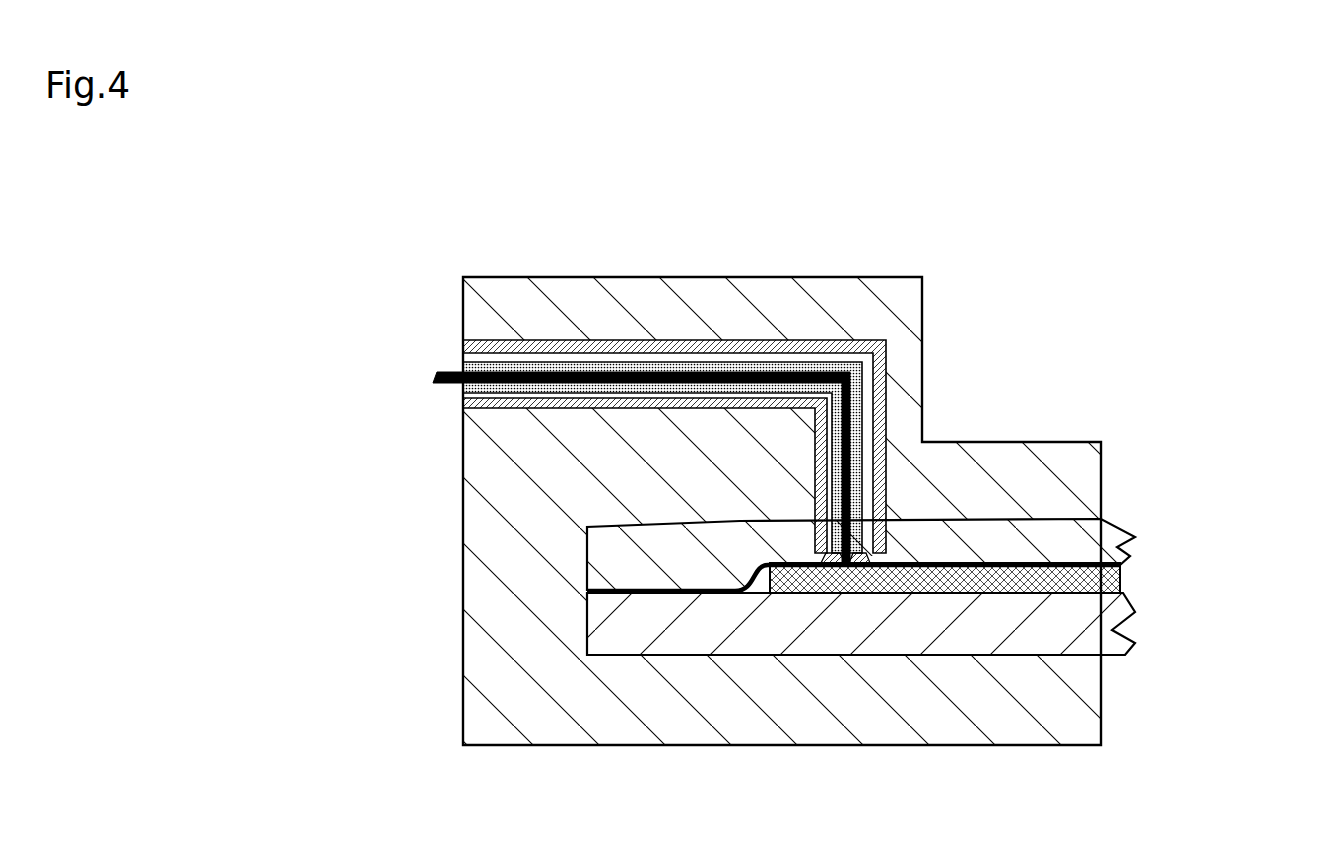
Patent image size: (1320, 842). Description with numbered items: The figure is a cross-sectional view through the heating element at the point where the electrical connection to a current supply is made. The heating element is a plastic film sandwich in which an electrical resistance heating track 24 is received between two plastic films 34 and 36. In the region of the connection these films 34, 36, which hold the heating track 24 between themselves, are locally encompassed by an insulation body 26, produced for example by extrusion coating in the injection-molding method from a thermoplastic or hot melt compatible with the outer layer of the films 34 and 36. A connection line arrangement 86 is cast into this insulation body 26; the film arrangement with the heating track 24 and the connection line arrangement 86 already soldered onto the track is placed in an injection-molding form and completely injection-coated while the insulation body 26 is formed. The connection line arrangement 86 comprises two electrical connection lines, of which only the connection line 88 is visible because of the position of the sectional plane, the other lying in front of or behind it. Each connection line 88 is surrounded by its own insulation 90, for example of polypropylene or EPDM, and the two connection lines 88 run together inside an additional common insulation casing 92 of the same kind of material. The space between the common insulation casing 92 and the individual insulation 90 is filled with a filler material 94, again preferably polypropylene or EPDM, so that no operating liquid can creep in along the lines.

The resistance heating track 24 is at (1120, 584).
The insulation body 26 is at (922, 267).
The plastic film 34 is at (1100, 632).
The plastic film 36 is at (1098, 523).
The connection line arrangement 86 is at (601, 386).
The connection line 88 is at (433, 377).
The insulation 90 is at (458, 388).
The common insulation casing 92 is at (460, 412).
The filler material 94 is at (473, 352).